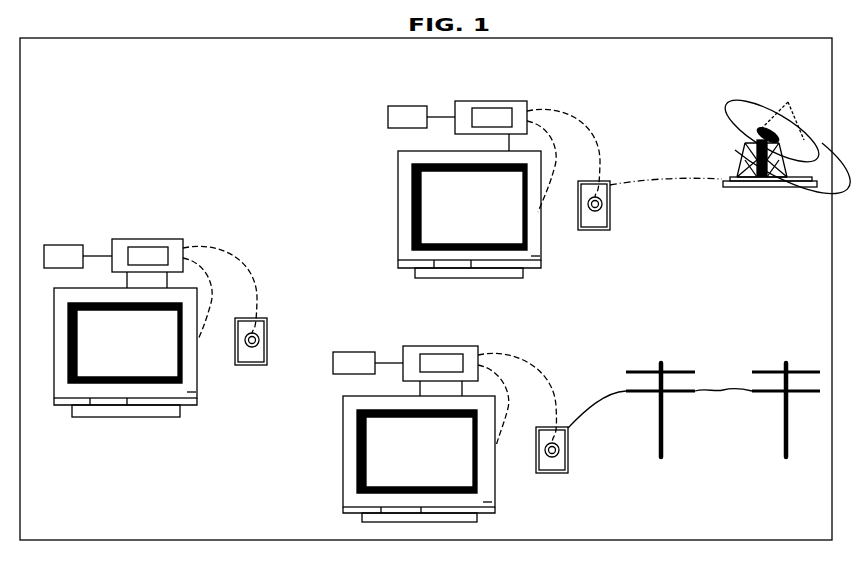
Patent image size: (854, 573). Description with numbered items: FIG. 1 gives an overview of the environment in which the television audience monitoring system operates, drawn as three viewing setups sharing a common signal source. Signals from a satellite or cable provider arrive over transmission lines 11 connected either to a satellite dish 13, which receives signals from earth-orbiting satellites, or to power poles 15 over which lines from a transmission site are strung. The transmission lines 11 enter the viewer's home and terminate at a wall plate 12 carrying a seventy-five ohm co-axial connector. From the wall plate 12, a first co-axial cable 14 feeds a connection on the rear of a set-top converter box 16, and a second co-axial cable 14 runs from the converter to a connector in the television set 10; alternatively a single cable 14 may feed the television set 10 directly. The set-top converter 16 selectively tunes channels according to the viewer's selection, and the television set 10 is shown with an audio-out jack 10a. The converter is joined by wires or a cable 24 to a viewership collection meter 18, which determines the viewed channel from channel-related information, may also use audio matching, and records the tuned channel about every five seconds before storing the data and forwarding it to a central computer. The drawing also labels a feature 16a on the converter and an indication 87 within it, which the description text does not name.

The television set 10 is at (297, 336).
The audio-out jack 10a is at (195, 398).
The transmission lines 11 is at (660, 306).
The wall plate 12 is at (270, 340).
The satellite dish 13 is at (783, 147).
The co-axial cable 14 is at (255, 300).
The power poles 15 is at (723, 423).
The set-top converter box 16 is at (167, 235).
The set-top box display 16a is at (145, 244).
The viewership collection meter 18 is at (65, 243).
The cable 24 is at (91, 252).
The channel number 87 is at (320, 240).